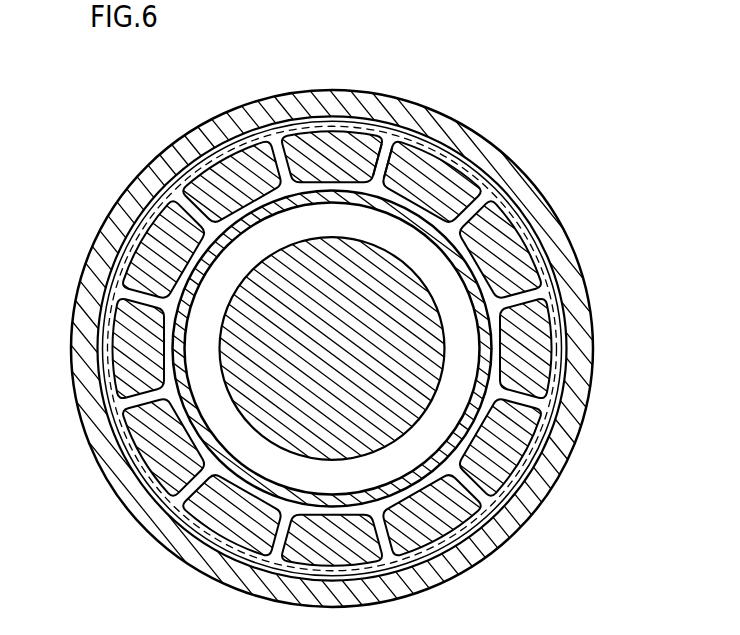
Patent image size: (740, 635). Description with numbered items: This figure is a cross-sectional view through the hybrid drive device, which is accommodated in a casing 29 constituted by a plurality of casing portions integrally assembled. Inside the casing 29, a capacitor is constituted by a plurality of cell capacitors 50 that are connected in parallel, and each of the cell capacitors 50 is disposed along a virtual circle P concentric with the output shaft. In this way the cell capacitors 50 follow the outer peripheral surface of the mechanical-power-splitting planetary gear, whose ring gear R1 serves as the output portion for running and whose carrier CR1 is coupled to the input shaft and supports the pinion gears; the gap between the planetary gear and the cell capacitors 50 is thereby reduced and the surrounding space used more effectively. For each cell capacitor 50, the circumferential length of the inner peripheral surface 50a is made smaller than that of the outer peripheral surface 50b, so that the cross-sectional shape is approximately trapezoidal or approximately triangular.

The casing 29 is at (393, 113).
The cell capacitor 50 is at (330, 152).
The inner peripheral surface 50a is at (403, 193).
The outer peripheral surface 50b is at (447, 160).
The virtual circle P is at (502, 194).
The ring gear R1 is at (482, 318).
The carrier CR1 is at (410, 352).